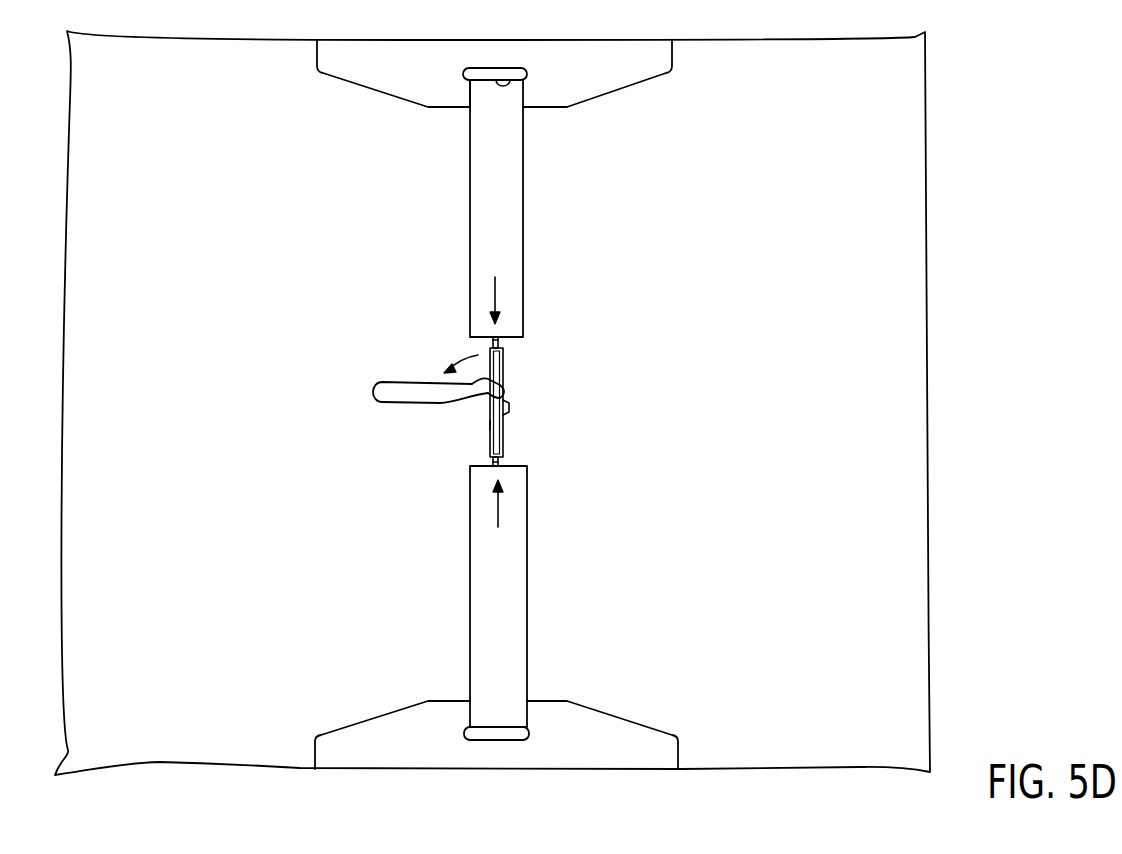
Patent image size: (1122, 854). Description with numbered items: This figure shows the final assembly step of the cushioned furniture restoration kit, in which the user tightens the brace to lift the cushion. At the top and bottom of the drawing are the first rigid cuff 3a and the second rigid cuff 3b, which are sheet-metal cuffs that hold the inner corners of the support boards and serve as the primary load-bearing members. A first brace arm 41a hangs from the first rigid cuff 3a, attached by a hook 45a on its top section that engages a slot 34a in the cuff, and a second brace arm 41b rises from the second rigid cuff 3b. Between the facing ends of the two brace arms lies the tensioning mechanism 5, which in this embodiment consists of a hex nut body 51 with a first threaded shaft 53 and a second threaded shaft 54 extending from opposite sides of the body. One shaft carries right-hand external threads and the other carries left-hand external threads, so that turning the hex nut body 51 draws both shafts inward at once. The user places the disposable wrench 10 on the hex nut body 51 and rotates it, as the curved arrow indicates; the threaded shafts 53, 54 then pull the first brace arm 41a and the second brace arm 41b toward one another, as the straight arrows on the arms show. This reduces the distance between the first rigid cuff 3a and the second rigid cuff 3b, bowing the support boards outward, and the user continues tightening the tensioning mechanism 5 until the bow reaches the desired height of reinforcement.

The first rigid cuff 3a is at (565, 48).
The second rigid cuff 3b is at (567, 762).
The slot 34a is at (510, 72).
The hook 45a is at (480, 90).
The first brace arm 41a is at (512, 222).
The second brace arm 41b is at (515, 632).
The tensioning mechanism 5 is at (506, 382).
The second threaded shaft 54 is at (500, 343).
The hex nut body 51 is at (502, 432).
The first threaded shaft 53 is at (495, 462).
The wrench 10 is at (432, 398).